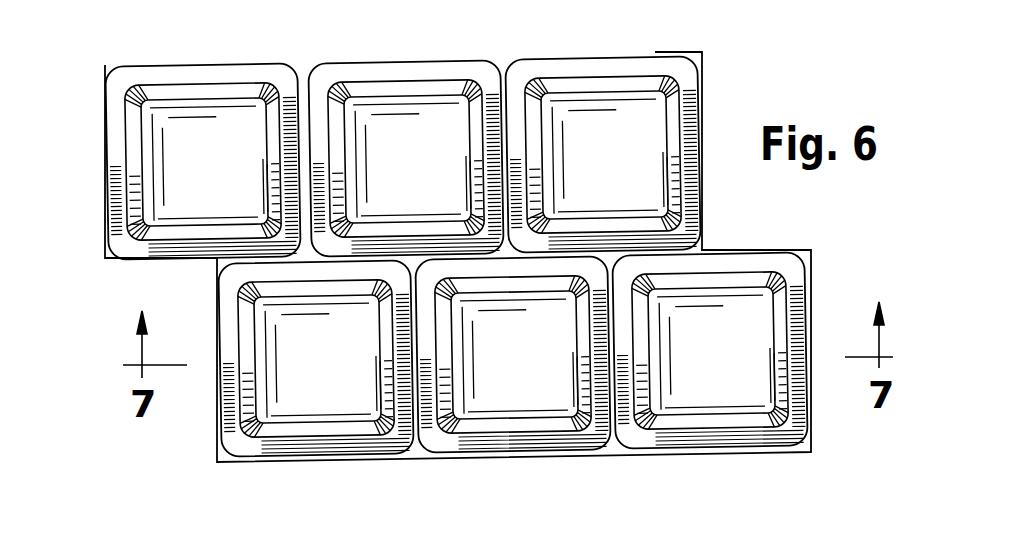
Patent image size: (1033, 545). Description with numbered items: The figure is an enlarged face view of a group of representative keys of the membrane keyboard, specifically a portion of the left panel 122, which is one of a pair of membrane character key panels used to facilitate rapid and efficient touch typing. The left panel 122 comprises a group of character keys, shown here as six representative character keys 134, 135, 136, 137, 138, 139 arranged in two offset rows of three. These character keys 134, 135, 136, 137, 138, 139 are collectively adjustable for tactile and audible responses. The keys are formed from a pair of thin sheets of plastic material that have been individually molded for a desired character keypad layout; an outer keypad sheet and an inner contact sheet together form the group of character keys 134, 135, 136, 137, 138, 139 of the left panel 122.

The left panel 122 is at (712, 60).
The character key 134 is at (197, 131).
The character key 135 is at (402, 108).
The character key 136 is at (607, 100).
The character key 137 is at (330, 408).
The character key 138 is at (518, 400).
The character key 139 is at (738, 402).